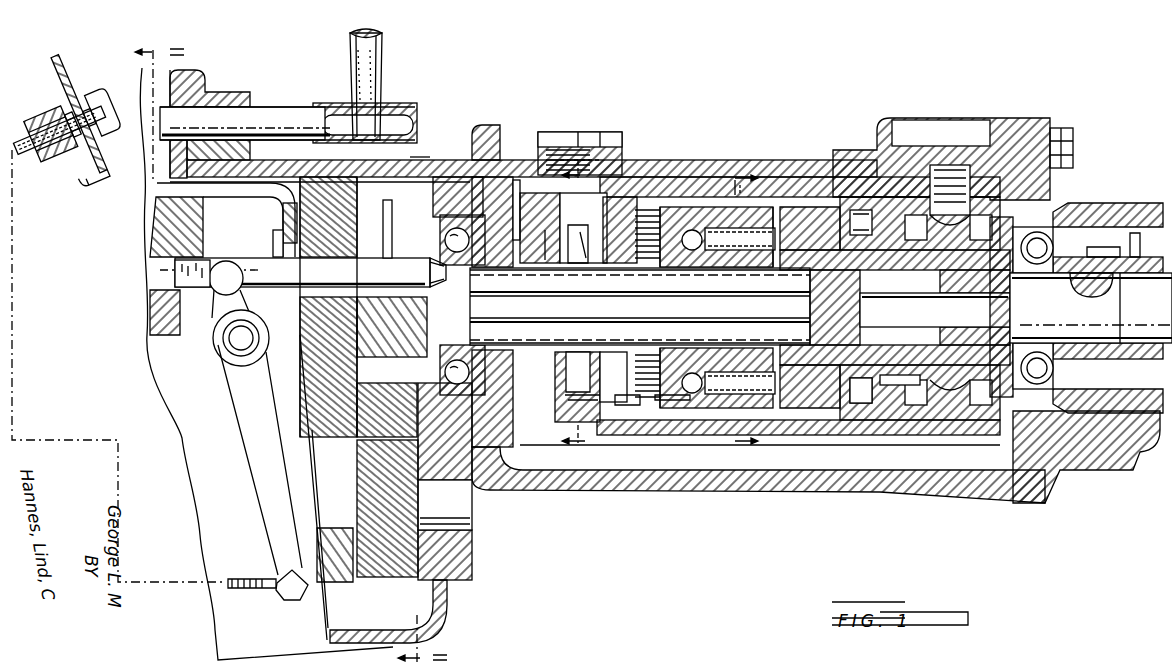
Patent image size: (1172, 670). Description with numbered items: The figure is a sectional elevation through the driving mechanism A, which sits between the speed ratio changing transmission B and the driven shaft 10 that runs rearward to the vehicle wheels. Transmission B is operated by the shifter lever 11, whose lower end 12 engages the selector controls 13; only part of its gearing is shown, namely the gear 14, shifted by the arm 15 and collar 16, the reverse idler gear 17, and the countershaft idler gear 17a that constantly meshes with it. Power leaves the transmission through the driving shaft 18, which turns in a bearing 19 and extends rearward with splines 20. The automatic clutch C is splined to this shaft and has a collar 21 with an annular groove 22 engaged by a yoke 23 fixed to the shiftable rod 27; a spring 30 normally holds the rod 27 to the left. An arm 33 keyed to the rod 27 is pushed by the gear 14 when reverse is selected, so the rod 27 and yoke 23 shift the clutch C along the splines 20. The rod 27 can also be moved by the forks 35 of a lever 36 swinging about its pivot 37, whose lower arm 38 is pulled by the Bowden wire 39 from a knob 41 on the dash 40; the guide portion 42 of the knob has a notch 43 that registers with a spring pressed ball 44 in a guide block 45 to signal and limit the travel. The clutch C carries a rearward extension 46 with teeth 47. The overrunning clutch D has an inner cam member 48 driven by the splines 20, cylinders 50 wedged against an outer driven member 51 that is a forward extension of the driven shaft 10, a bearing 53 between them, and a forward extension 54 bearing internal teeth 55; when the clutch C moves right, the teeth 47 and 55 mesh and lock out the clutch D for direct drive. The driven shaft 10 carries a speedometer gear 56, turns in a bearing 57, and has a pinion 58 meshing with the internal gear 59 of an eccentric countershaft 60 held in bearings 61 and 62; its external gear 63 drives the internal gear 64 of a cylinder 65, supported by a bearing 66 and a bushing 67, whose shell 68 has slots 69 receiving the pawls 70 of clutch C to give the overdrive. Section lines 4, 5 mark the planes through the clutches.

The driven shaft 10 is at (1091, 308).
The shifter lever 11 is at (386, 46).
The lower end 12 is at (350, 108).
The selector controls 13 is at (412, 135).
The gear 14 is at (360, 198).
The arm 15 is at (262, 195).
The collar 16 is at (278, 232).
The reverse idler gear 17 is at (382, 395).
The countershaft idler gear 17a is at (392, 580).
The driving shaft 18 is at (666, 356).
The bearing 19 is at (440, 240).
The splines 20 is at (862, 310).
The collar 21 is at (530, 220).
The annular groove 22 is at (550, 335).
The yoke 23 is at (517, 180).
The shiftable rod 27 is at (295, 271).
The spring 30 is at (446, 278).
The arm 33 is at (392, 222).
The forks 35 is at (235, 260).
The lever 36 is at (222, 296).
The pivot 37 is at (240, 341).
The arm 38 is at (242, 452).
The Bowden wire 39 is at (228, 586).
The vehicle dash 40 is at (87, 108).
The handle 41 is at (96, 101).
The guide portion 42 is at (57, 190).
The notch 43 is at (39, 118).
The spring pressed ball 44 is at (67, 149).
The guide block 45 is at (44, 97).
The rearward extension 46 is at (646, 215).
The teeth 47 is at (628, 405).
The inner cam member 48 is at (745, 268).
The cylinders 50 is at (765, 228).
The outer cylindrical driven member 51 is at (755, 228).
The bearing 53 is at (692, 230).
The forward extension 54 is at (660, 205).
The internal teeth 55 is at (655, 268).
The gear 56 is at (1105, 247).
The bearing 57 is at (1050, 230).
The pinion 58 is at (1010, 288).
The internal gear 59 is at (895, 307).
The countershaft 60 is at (980, 215).
The bearing 61 is at (910, 215).
The bearing 62 is at (960, 215).
The external gear 63 is at (856, 380).
The internal gear 64 is at (885, 385).
The cylinder 65 is at (855, 210).
The bearing 66 is at (870, 197).
The bushing 67 is at (662, 402).
The shell 68 is at (606, 165).
The slots 69 is at (598, 405).
The pawls 70 is at (583, 228).
The section line 4 is at (761, 304).
The section line 5 is at (575, 172).
The driving mechanism A is at (740, 173).
The speed ratio changing transmission B is at (418, 160).
The automatic clutch C is at (553, 225).
The overrunning clutch D is at (775, 215).